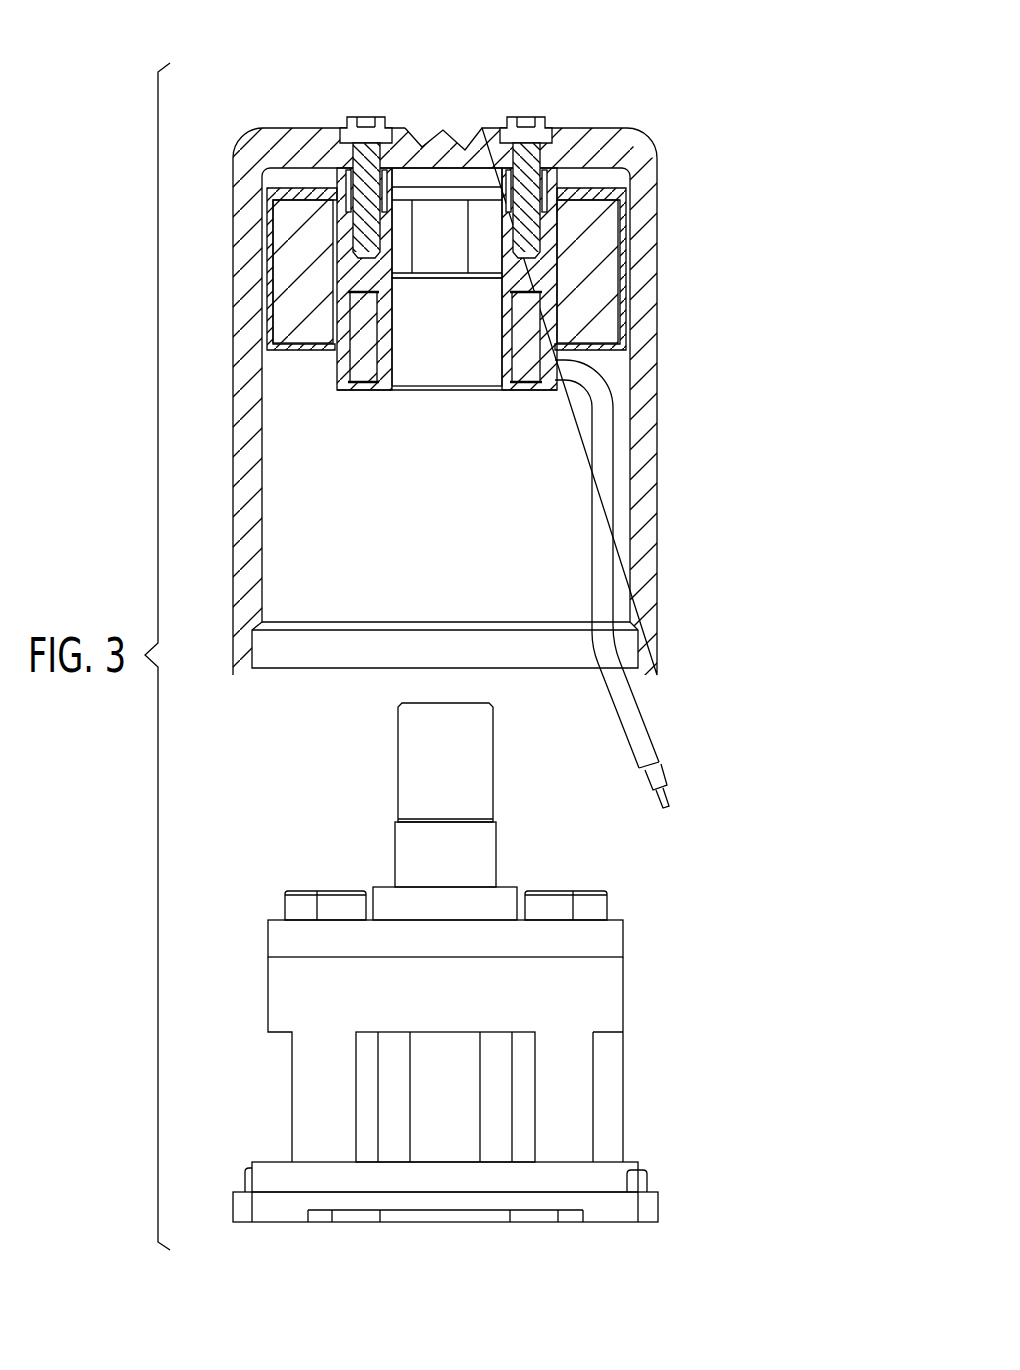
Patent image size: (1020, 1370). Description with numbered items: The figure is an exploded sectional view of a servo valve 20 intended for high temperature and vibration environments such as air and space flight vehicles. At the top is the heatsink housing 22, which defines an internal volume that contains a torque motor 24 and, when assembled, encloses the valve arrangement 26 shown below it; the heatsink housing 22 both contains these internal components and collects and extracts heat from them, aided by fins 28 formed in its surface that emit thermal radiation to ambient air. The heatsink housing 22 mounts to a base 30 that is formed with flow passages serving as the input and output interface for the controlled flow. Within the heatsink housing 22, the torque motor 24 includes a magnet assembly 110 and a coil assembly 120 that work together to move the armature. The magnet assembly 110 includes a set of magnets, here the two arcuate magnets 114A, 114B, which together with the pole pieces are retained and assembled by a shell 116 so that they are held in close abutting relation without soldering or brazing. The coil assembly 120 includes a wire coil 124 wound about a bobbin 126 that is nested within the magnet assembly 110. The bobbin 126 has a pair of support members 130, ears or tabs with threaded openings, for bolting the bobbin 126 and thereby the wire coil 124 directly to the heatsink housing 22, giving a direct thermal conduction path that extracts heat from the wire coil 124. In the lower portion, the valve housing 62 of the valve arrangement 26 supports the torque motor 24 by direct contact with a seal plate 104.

The servo valve 20 is at (682, 93).
The heatsink housing 22 is at (650, 527).
The torque motor 24 is at (628, 183).
The valve arrangement 26 is at (646, 892).
The fins 28 is at (452, 140).
The base 30 is at (650, 1208).
The valve housing 62 is at (612, 1005).
The seal plate 104 is at (274, 938).
The magnet assembly 110 is at (602, 297).
The arcuate magnet 114A is at (298, 242).
The arcuate magnet 114B is at (610, 248).
The shell 116 is at (300, 193).
The coil assembly 120 is at (562, 373).
The wire coil 124 is at (528, 360).
The bobbin 126 is at (367, 392).
The support members 130 is at (347, 232).